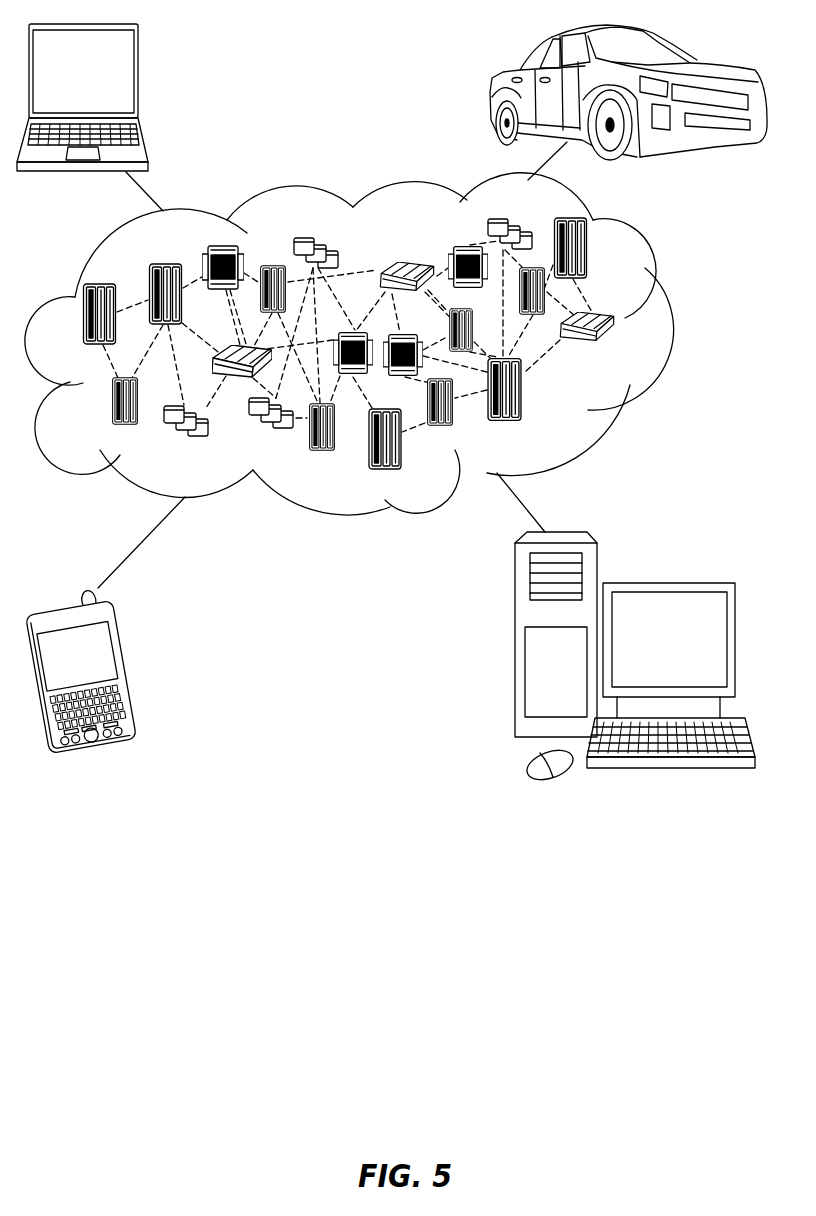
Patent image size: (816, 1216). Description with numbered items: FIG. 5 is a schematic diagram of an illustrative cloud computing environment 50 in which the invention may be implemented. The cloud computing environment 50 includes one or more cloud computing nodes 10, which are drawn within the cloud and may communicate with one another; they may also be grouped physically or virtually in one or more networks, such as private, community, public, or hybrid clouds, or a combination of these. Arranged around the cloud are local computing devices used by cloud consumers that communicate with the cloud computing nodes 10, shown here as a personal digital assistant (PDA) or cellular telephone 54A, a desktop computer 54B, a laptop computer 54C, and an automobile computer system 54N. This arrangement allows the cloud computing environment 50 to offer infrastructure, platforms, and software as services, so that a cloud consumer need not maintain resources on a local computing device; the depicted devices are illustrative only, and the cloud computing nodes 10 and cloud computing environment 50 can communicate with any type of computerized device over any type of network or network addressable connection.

The cloud computing nodes 10 is at (628, 358).
The cloud computing environment 50 is at (371, 344).
The personal digital assistant (PDA) or cellular telephone 54A is at (132, 668).
The desktop computer 54B is at (665, 583).
The laptop computer 54C is at (138, 80).
The automobile computer system 54N is at (492, 92).